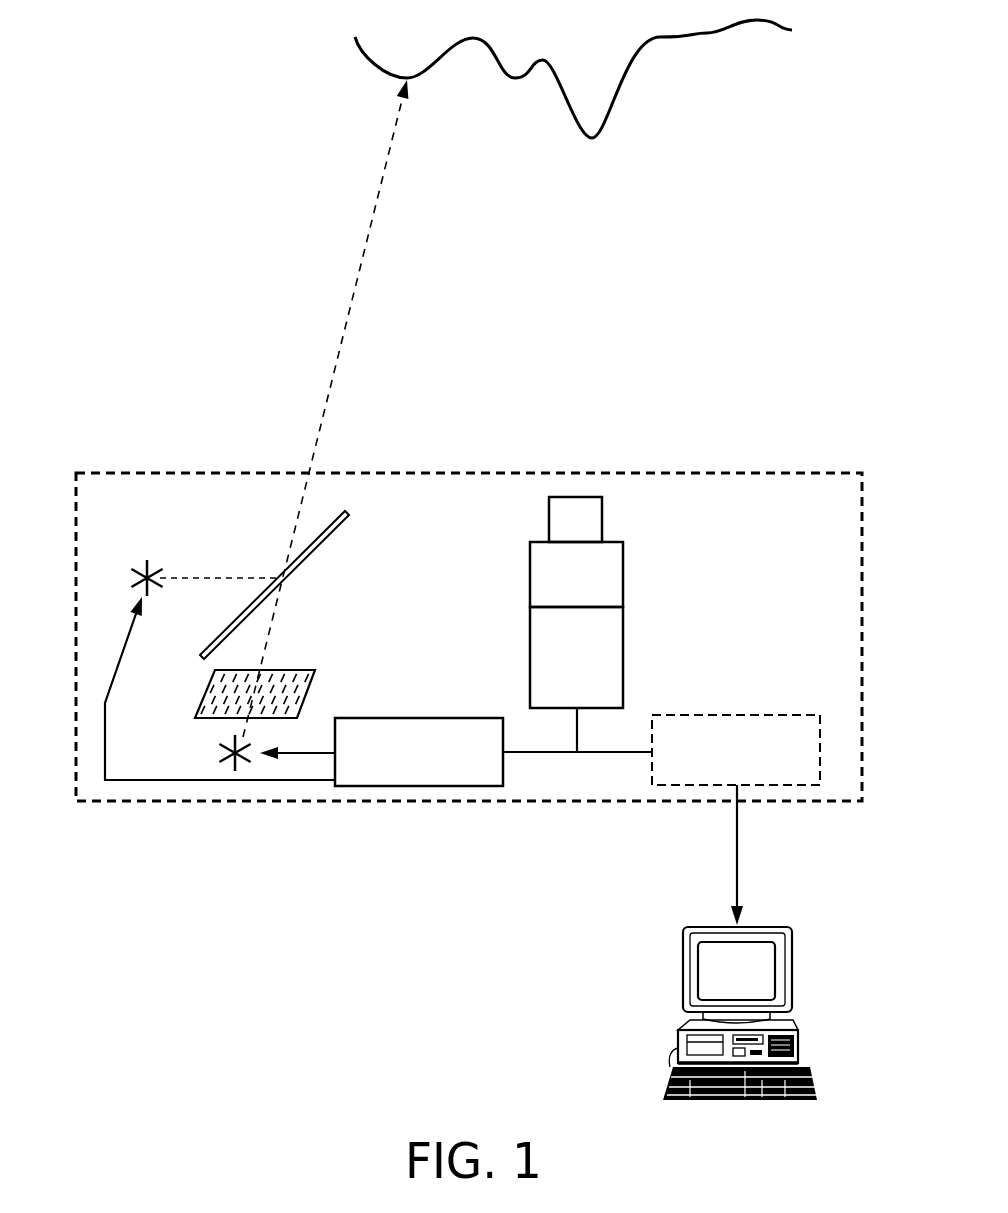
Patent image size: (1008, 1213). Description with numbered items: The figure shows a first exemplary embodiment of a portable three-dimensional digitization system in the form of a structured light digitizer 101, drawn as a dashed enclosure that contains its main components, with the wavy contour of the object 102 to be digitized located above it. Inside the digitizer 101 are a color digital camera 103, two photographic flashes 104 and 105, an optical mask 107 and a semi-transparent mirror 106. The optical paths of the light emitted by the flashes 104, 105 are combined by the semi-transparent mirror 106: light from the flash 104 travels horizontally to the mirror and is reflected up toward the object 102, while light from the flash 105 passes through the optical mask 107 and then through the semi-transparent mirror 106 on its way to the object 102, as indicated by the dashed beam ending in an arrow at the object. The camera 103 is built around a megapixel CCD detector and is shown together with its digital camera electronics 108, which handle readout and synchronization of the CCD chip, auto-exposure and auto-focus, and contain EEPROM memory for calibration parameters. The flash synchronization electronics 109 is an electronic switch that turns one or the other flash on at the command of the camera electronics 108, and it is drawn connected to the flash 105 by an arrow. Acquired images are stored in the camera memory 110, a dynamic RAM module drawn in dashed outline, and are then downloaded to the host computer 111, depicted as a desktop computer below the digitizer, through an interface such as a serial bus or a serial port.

The structured light digitizer 101 is at (839, 513).
The object 102 is at (595, 46).
The color digital camera 103 is at (611, 592).
The photographic flash 104 is at (157, 570).
The photographic flash 105 is at (223, 750).
The semi-transparent mirror 106 is at (300, 567).
The optical mask 107 is at (308, 692).
The digital camera electronics 108 is at (609, 680).
The flash synchronization electronics 109 is at (450, 771).
The camera memory 110 is at (765, 768).
The host computer 111 is at (792, 997).